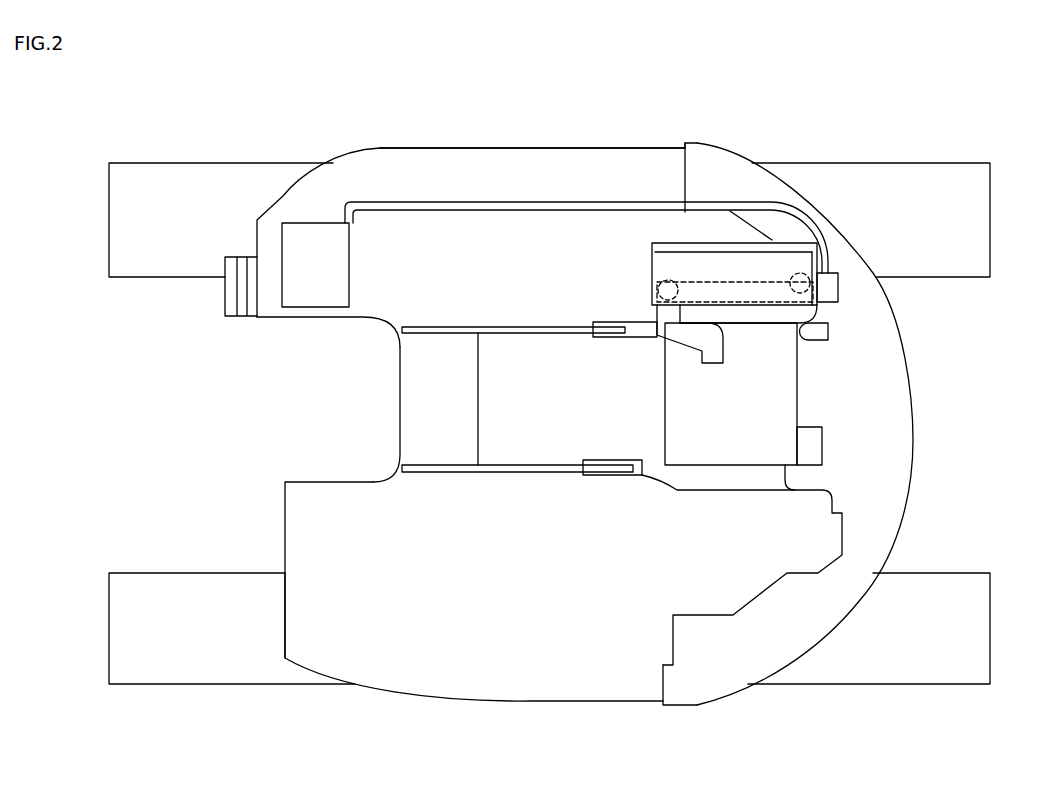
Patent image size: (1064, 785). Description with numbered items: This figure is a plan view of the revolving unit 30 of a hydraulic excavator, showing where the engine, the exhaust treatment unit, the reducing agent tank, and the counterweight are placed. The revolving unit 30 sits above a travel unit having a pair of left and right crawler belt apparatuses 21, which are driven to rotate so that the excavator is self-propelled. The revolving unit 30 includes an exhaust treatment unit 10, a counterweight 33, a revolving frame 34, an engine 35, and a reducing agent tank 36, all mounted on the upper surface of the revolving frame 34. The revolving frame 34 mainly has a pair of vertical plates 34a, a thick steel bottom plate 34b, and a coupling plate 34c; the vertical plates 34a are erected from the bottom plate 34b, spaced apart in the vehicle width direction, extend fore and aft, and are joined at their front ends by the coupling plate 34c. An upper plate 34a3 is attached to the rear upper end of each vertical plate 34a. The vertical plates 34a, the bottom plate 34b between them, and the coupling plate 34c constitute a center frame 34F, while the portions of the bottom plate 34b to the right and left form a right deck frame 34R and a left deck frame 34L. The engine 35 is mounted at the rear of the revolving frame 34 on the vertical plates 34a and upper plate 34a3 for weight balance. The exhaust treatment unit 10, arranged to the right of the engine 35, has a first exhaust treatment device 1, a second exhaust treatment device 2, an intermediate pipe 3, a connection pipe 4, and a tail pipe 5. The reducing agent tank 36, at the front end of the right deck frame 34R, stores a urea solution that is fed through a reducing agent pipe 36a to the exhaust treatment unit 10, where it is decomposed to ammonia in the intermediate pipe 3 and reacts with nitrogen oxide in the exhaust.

The first exhaust treatment device 1 is at (715, 269).
The second exhaust treatment device 2 is at (669, 250).
The intermediate pipe 3 is at (762, 313).
The connection pipe 4 is at (713, 343).
The tail pipe 5 is at (815, 332).
The exhaust treatment unit 10 is at (772, 232).
The crawler belt apparatus 21 is at (972, 220).
The revolving unit 30 is at (593, 115).
The counterweight 33 is at (870, 447).
The revolving frame 34 is at (540, 648).
The center frame 34F is at (306, 336).
The left deck frame 34L is at (385, 627).
The right deck frame 34R is at (528, 180).
The vertical plate 34a is at (450, 331).
The upper plate 34a3 is at (645, 332).
The bottom plate 34b is at (457, 165).
The coupling plate 34c is at (428, 382).
The engine 35 is at (763, 402).
The reducing agent tank 36 is at (312, 250).
The reducing agent pipe 36a is at (412, 202).